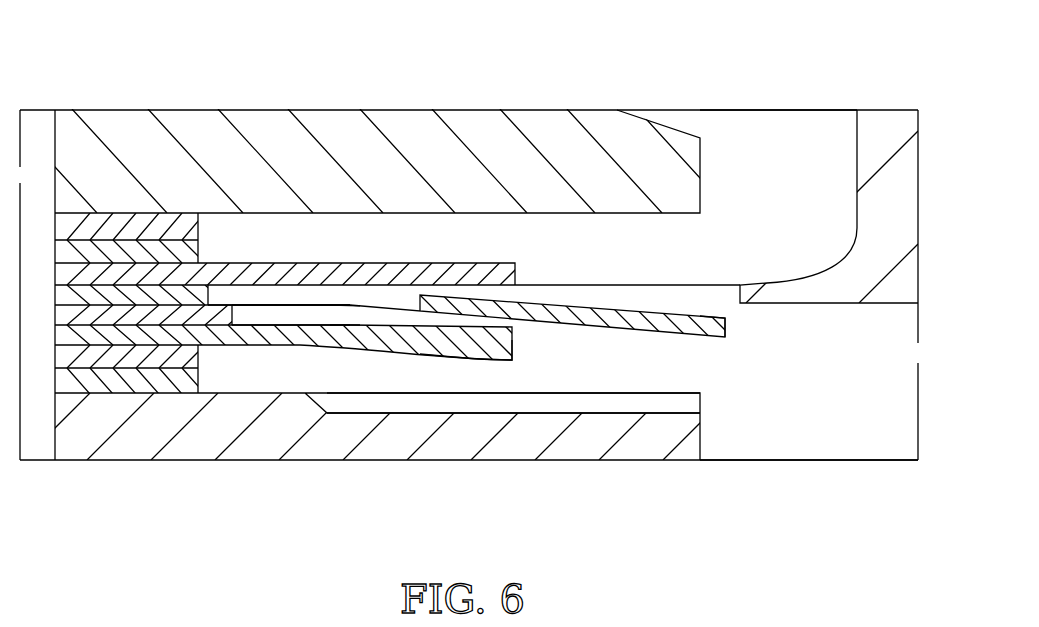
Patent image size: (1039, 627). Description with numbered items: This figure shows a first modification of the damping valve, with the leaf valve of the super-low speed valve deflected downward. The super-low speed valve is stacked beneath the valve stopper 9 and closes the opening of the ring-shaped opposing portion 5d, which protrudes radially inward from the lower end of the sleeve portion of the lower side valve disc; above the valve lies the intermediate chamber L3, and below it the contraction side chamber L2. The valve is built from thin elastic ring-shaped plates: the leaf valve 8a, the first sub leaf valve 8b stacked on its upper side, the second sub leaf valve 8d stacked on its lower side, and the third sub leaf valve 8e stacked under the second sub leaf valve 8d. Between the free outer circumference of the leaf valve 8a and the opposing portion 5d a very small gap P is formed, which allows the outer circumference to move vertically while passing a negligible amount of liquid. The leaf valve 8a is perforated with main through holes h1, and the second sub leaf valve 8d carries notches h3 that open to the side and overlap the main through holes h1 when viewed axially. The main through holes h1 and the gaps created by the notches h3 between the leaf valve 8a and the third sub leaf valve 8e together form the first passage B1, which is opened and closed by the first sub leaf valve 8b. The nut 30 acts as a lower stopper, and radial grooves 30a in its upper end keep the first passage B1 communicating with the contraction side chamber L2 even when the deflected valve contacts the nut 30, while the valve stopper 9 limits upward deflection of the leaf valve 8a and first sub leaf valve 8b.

The valve stopper 9 is at (648, 145).
The opposing portion 5d is at (800, 277).
The intermediate chamber L3 is at (817, 145).
The first sub leaf valve 8b is at (517, 262).
The second sub leaf valve 8d is at (328, 421).
The third sub leaf valve 8e is at (509, 361).
The leaf valve 8a is at (718, 338).
The gap P is at (727, 313).
The first passage B1 is at (355, 322).
The main through holes h1 is at (355, 293).
The notches h3 is at (312, 313).
The nut 30 is at (709, 437).
The grooves 30a is at (618, 402).
The contraction side chamber L2 is at (876, 415).